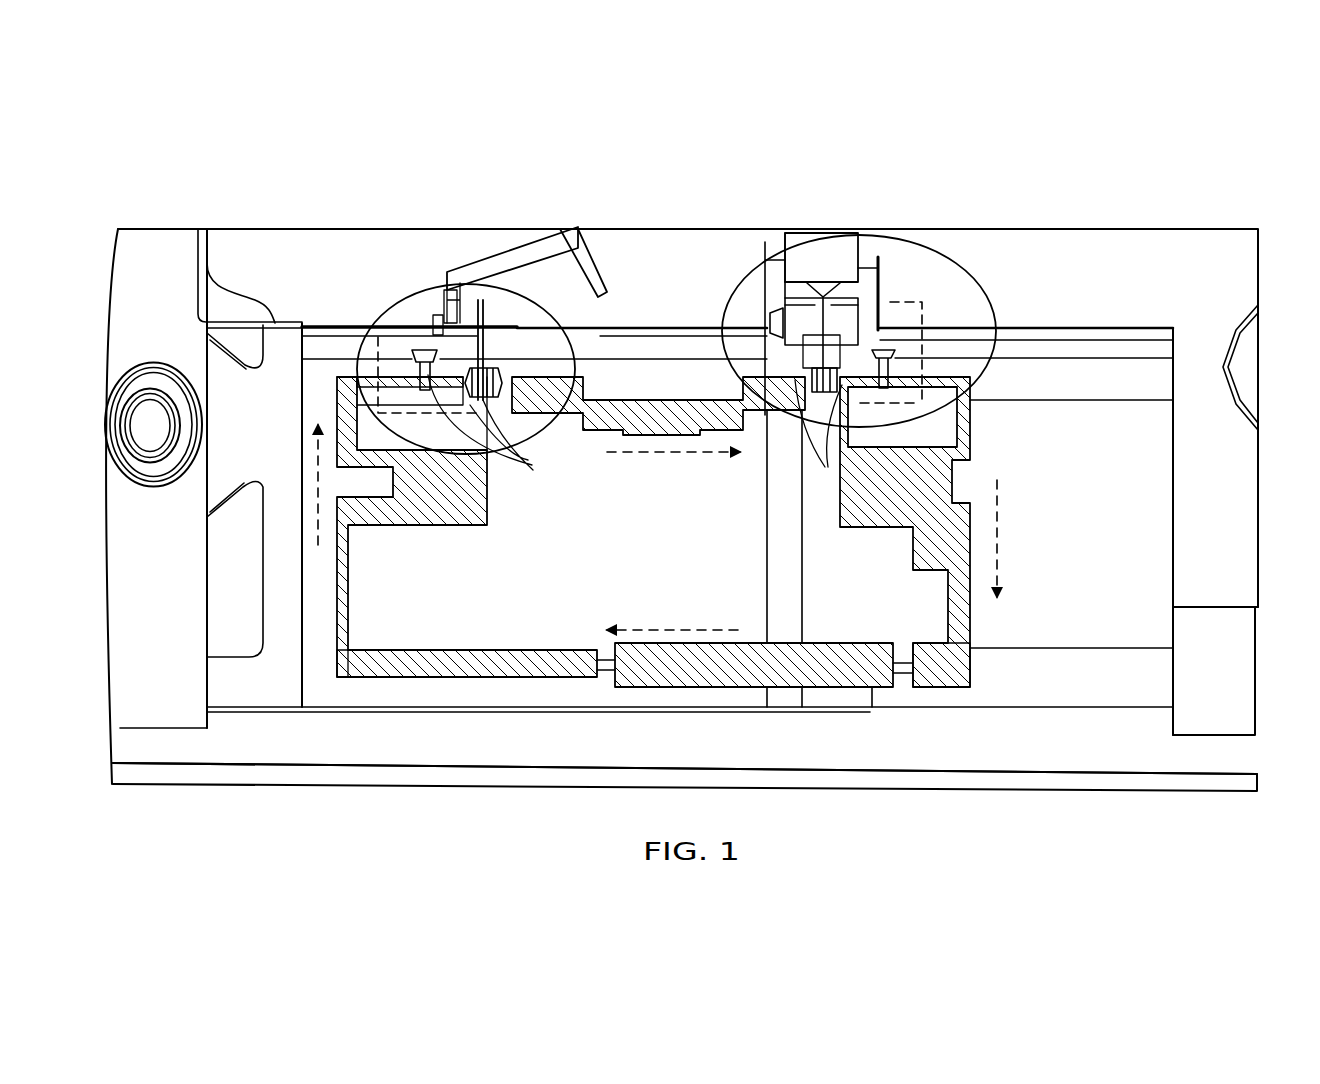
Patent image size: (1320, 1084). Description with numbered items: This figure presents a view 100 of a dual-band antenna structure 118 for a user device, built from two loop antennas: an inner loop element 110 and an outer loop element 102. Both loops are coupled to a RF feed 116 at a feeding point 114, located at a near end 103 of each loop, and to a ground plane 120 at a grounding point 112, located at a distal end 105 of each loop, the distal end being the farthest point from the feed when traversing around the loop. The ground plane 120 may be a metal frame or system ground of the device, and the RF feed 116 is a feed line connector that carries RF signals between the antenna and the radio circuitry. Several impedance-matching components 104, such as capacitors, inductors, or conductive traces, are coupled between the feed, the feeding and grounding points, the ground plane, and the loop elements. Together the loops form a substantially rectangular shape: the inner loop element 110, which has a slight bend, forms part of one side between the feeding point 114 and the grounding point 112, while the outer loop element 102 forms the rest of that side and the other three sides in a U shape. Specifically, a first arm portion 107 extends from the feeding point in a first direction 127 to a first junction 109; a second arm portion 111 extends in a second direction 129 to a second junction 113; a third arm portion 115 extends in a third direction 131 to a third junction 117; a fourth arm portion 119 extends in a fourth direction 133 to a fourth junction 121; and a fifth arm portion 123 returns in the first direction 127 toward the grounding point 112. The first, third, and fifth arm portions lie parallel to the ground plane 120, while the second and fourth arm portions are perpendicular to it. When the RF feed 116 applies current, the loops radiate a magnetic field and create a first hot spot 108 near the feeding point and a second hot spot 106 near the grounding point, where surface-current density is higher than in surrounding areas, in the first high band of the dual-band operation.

The view 100 is at (1135, 205).
The outer loop element 102 is at (445, 650).
The near end 103 is at (859, 363).
The impedance-matching components 104 is at (635, 434).
The distal end 105 is at (456, 356).
The second hot spot 106 is at (443, 322).
The first arm portion 107 is at (903, 425).
The first hot spot 108 is at (917, 240).
The first junction 109 is at (913, 450).
The inner loop element 110 is at (632, 400).
The second arm portion 111 is at (970, 460).
The grounding point 112 is at (503, 322).
The second junction 113 is at (970, 687).
The feeding point 114 is at (860, 400).
The third arm portion 115 is at (757, 687).
The RF feed 116 is at (822, 250).
The third junction 117 is at (348, 677).
The dual-band antenna structure 118 is at (880, 752).
The fourth arm portion 119 is at (347, 562).
The ground plane 120 is at (1258, 253).
The fourth junction 121 is at (378, 422).
The fifth arm portion 123 is at (365, 375).
The first direction 127 is at (673, 468).
The second direction 129 is at (1018, 538).
The third direction 131 is at (672, 613).
The fourth direction 133 is at (292, 485).